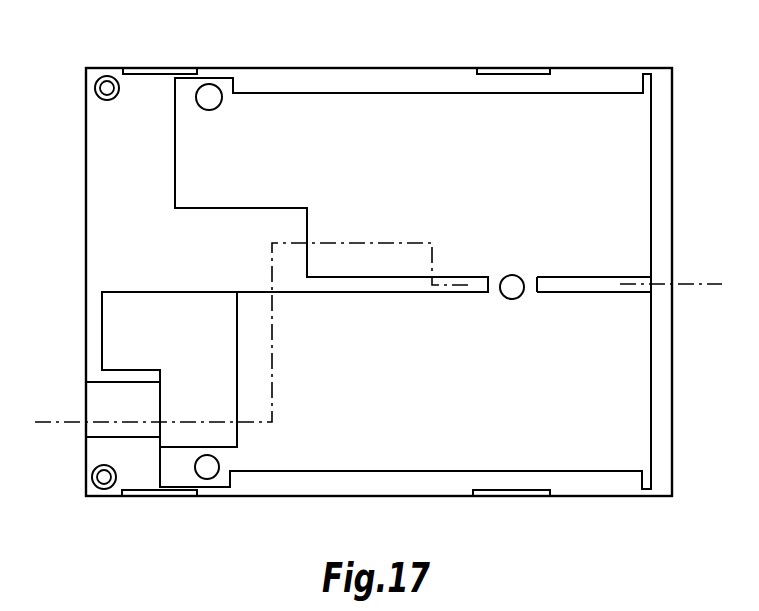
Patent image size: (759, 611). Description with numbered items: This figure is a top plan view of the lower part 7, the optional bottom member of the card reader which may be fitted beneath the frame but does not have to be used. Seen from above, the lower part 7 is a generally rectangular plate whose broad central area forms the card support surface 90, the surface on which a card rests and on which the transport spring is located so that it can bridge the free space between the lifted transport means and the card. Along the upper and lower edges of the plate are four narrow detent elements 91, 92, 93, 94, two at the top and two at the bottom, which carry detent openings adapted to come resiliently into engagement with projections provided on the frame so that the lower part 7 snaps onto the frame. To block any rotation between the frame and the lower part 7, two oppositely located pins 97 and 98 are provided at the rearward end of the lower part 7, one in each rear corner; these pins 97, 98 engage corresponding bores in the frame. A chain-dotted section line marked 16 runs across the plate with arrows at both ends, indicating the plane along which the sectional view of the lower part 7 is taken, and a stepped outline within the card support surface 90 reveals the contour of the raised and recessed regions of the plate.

The lower part 7 is at (388, 67).
The section line of FIG. 16 is at (40, 422).
The card support surface 90 is at (610, 160).
The detent element 91 is at (175, 67).
The detent element 92 is at (533, 67).
The detent element 93 is at (178, 498).
The detent element 94 is at (531, 497).
The pin 97 is at (103, 75).
The pin 98 is at (93, 478).